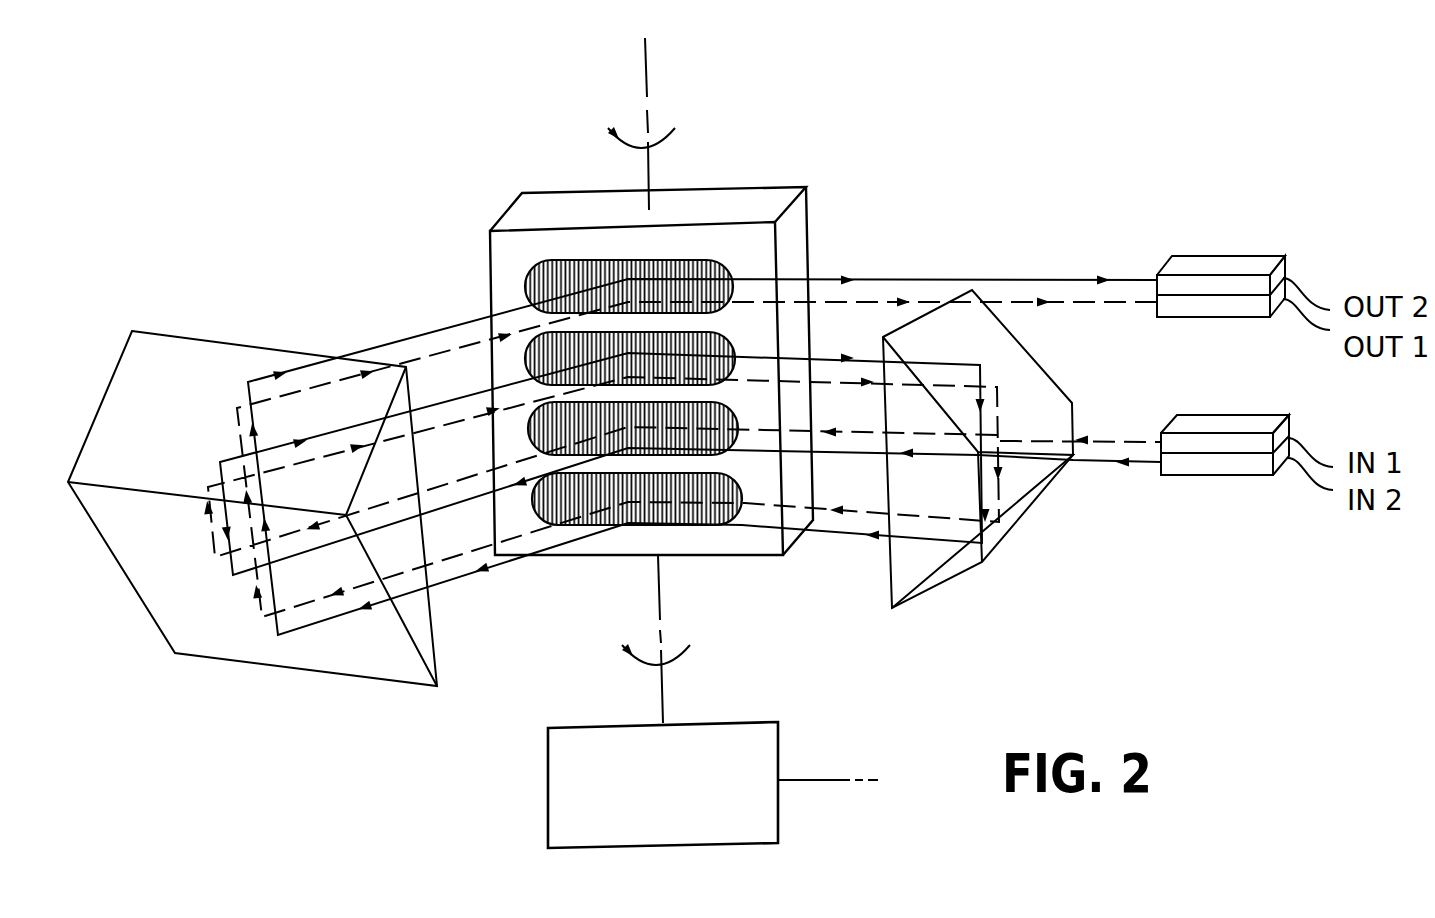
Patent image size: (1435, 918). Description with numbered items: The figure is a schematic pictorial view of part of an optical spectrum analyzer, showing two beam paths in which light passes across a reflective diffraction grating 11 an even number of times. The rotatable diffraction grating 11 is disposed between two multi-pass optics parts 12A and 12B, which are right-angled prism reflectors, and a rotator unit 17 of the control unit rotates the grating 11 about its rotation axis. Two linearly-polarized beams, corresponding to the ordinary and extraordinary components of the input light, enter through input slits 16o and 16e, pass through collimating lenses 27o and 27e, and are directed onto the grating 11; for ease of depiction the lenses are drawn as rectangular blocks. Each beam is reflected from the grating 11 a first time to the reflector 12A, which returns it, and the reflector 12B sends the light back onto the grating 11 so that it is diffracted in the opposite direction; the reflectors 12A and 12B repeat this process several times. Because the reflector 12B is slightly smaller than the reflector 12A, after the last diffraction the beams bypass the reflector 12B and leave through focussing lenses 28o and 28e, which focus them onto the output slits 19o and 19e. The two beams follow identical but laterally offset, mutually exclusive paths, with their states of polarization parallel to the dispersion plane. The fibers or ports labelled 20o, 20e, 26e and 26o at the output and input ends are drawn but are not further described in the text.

The diffraction grating 11 is at (717, 187).
The multi-pass optics part 12A is at (197, 331).
The multi-pass optics part 12B is at (947, 577).
The rotator unit 17 is at (778, 746).
The focussing lens 28o is at (1200, 262).
The focussing lens 28e is at (1175, 308).
The output slit 19o is at (1282, 277).
The output slit 19e is at (1276, 303).
The output fiber 20 o-ray 20o is at (1303, 290).
The output fiber 20 e-ray 20e is at (1304, 312).
The collimating lens 27e is at (1213, 427).
The collimating lens 27o is at (1217, 477).
The input slit 16e is at (1283, 437).
The input slit 16o is at (1288, 460).
The input fiber 26 e-ray 26e is at (1306, 447).
The input fiber 26 o-ray 26o is at (1300, 472).